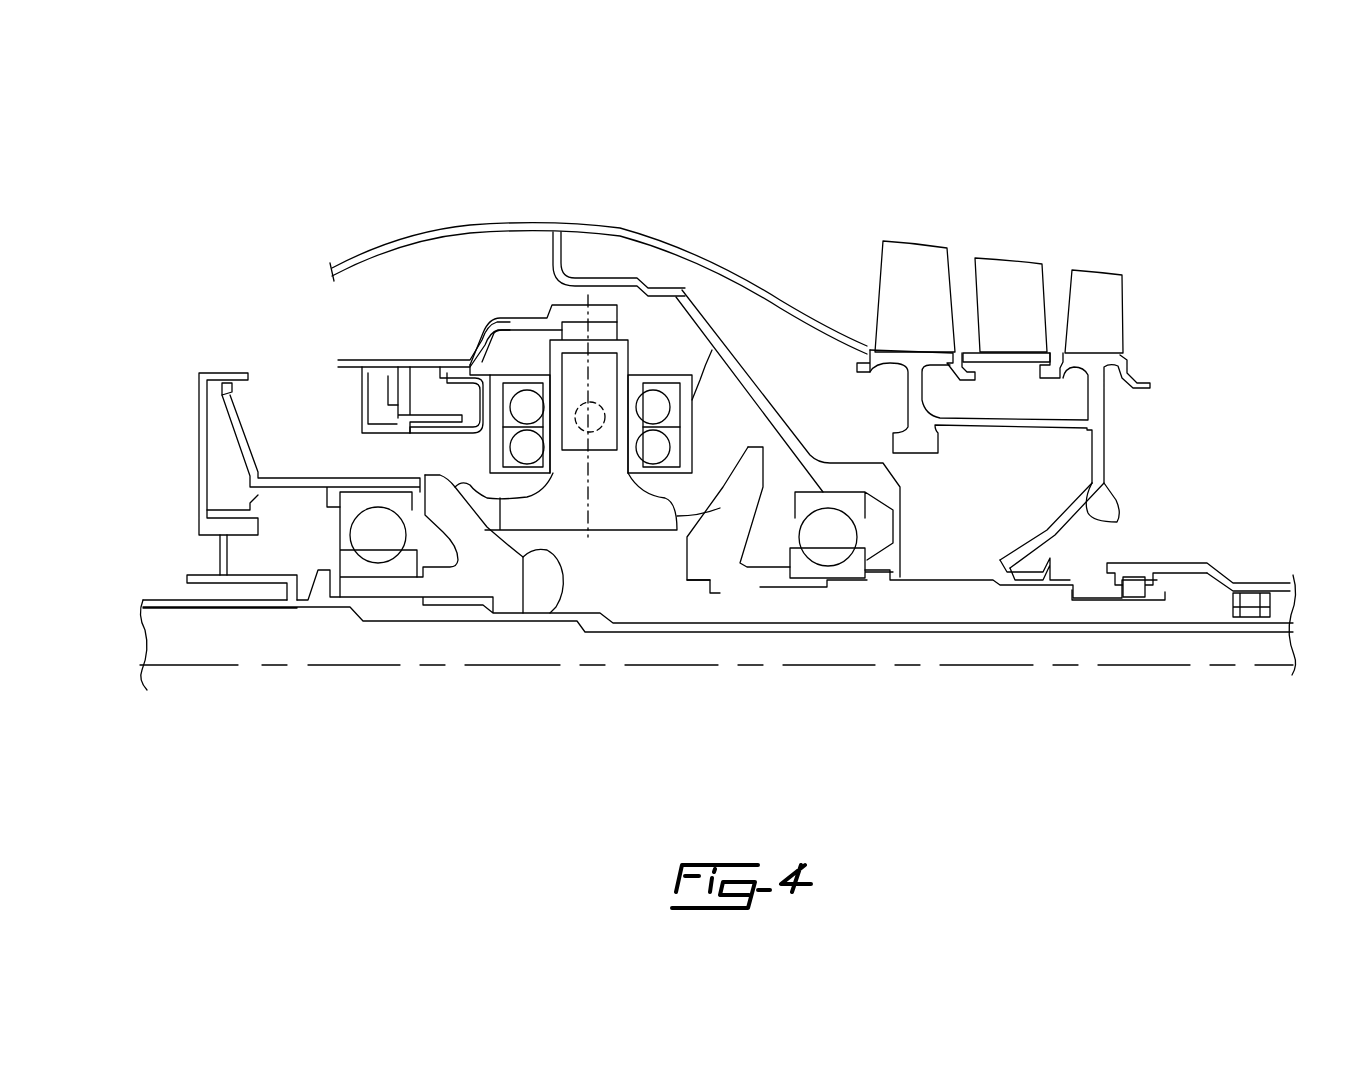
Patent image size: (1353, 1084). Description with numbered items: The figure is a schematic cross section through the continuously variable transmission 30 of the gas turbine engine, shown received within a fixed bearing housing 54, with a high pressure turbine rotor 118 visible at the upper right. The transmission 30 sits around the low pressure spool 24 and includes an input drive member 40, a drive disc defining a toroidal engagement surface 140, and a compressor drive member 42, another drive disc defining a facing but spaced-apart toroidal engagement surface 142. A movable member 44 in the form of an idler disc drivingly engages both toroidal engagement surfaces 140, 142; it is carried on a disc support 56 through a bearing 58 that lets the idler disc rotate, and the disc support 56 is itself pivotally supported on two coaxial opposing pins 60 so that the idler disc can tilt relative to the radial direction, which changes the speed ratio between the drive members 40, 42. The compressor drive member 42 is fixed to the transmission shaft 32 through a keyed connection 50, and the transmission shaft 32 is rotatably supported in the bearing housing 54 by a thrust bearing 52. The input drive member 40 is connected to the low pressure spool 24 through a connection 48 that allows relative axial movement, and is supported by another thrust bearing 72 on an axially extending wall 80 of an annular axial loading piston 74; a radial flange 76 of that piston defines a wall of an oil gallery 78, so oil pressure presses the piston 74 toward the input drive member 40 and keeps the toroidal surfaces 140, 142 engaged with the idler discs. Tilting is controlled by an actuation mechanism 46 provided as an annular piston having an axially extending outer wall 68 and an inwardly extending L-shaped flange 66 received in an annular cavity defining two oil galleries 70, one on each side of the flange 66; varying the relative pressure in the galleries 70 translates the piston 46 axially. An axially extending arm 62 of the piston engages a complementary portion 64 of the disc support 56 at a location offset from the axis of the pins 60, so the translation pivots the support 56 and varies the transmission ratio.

The low pressure spool 24 is at (1179, 631).
The transmission 30 is at (533, 282).
The transmission shaft 32 is at (873, 583).
The input drive member 40 is at (507, 583).
The compressor drive member 42 is at (723, 570).
The movable member 44 is at (713, 480).
The actuation mechanism 46 is at (394, 356).
The connection 48 is at (455, 603).
The keyed connection 50 is at (787, 590).
The thrust bearing 52 is at (846, 530).
The bearing housing 54 is at (790, 427).
The disc support 56 is at (708, 405).
The bearing 58 is at (688, 400).
The pins 60 is at (596, 402).
The arm 62 is at (572, 313).
The complementary portion 64 is at (577, 332).
The L-shaped flange 66 is at (397, 413).
The outer wall 68 is at (435, 400).
The oil galleries 70 is at (378, 395).
The thrust bearing 72 is at (372, 552).
The axial loading piston 74 is at (246, 473).
The radial flange 76 is at (218, 416).
The oil gallery 78 is at (215, 506).
The axially extending wall 80 is at (336, 490).
The high pressure turbine rotor 118 is at (918, 274).
The toroidal engagement surface 140 is at (567, 587).
The toroidal engagement surface 142 is at (663, 540).